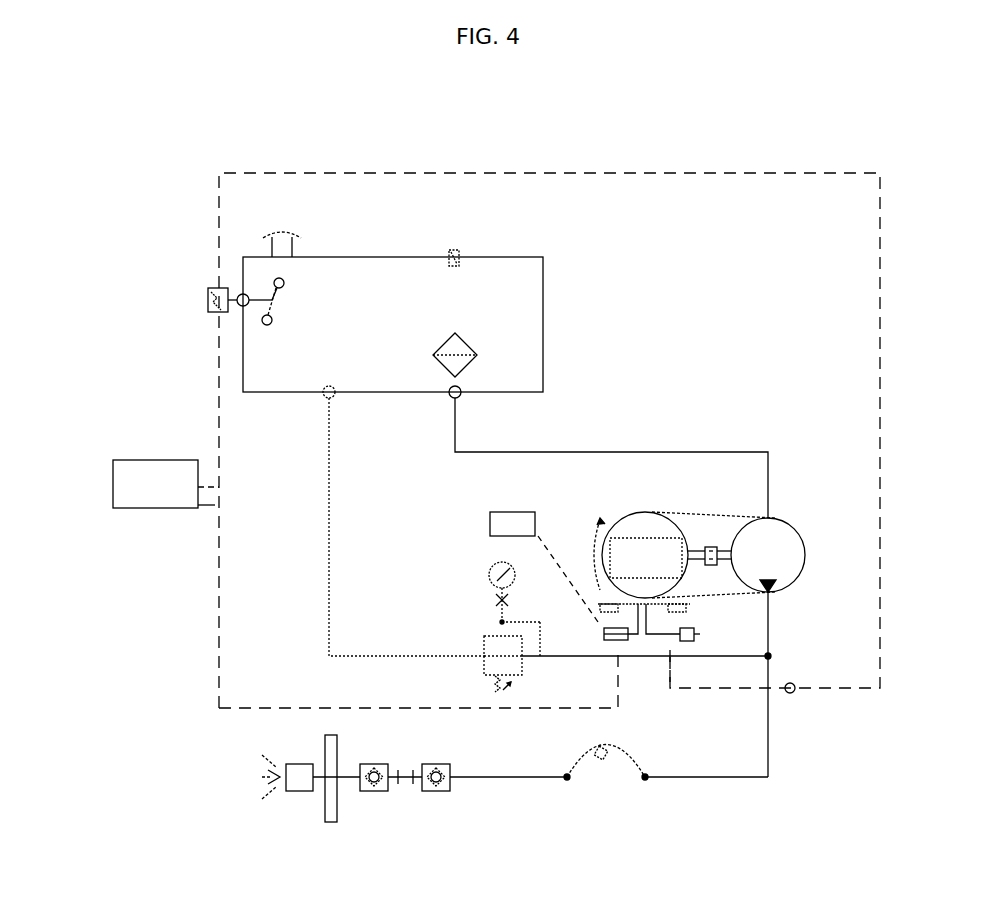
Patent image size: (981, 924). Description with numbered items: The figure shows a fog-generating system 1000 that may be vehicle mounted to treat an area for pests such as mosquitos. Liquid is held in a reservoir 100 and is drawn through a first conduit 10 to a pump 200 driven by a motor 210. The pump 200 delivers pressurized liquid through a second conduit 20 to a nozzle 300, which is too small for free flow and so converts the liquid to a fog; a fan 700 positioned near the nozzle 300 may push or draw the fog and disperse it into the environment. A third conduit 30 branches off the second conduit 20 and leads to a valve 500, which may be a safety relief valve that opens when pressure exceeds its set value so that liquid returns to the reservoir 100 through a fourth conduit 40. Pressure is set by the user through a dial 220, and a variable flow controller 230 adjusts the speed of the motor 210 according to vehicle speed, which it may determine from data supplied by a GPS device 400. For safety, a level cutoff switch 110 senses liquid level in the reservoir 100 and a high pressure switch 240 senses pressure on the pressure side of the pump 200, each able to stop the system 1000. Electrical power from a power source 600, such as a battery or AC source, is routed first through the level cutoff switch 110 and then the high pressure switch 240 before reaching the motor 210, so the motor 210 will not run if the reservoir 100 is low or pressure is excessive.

The system 1000 is at (150, 392).
The reservoir 100 is at (393, 315).
The level cutoff switch 110 is at (199, 301).
The power source 600 is at (166, 484).
The fourth conduit 40 is at (329, 513).
The first conduit 10 is at (513, 452).
The GPS device 400 is at (490, 522).
The valve 500 is at (484, 665).
The third conduit 30 is at (600, 660).
The motor 210 is at (648, 527).
The pump 200 is at (746, 647).
The variable flow controller 230 is at (604, 634).
The dial 220 is at (700, 634).
The high pressure switch 240 is at (750, 670).
The second conduit 20 is at (768, 749).
The fan 700 is at (325, 740).
The nozzle 300 is at (297, 792).